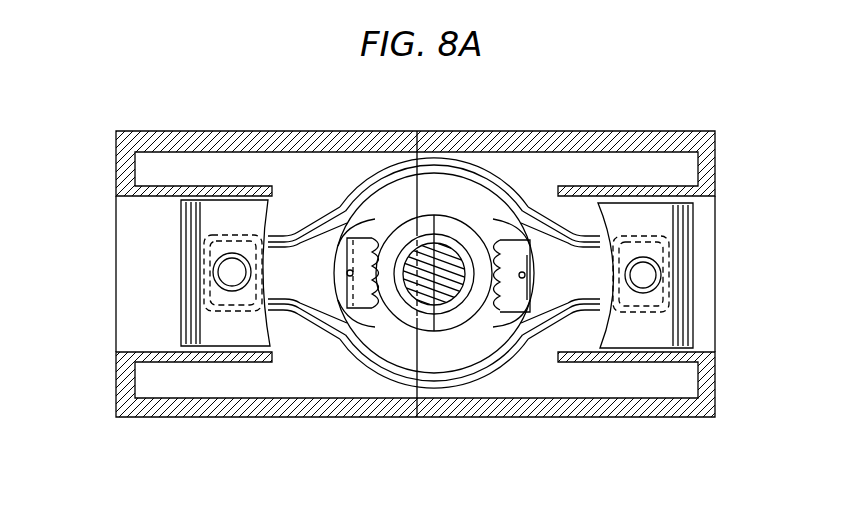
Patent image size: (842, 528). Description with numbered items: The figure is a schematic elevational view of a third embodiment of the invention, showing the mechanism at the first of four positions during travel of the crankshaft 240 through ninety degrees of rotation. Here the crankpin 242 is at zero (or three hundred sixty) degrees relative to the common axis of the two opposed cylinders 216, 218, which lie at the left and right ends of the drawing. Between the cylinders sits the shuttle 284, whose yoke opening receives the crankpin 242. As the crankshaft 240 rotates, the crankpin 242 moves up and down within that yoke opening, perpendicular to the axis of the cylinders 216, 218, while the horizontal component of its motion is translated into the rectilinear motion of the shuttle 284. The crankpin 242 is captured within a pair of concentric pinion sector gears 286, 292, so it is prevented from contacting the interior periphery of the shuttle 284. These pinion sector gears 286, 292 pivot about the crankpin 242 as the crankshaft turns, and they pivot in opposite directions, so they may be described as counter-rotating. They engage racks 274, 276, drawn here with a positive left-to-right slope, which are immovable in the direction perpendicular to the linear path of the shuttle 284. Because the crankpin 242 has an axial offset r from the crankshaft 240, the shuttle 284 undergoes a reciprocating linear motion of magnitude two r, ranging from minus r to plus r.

The shuttle 284 is at (462, 160).
The pinion sector gear 286 is at (466, 218).
The crankshaft 240 is at (392, 226).
The crankpin 242 is at (446, 290).
The pinion sector gear 292 is at (358, 297).
The rack 274 is at (520, 302).
The rack 276 is at (340, 303).
The cylinder 218 is at (127, 263).
The cylinder 216 is at (705, 272).